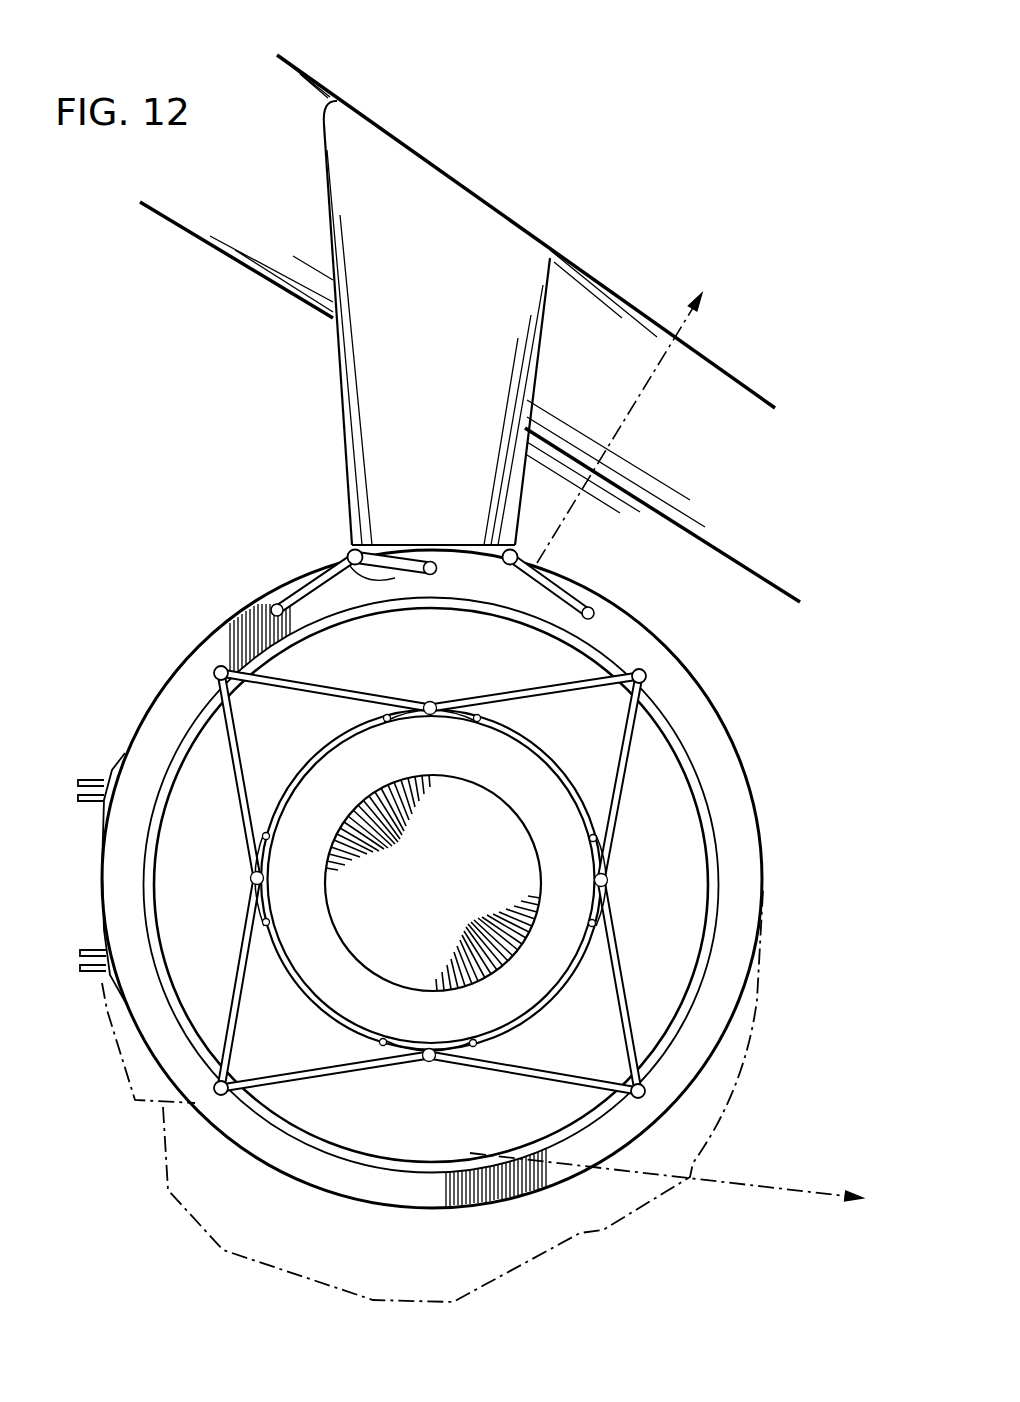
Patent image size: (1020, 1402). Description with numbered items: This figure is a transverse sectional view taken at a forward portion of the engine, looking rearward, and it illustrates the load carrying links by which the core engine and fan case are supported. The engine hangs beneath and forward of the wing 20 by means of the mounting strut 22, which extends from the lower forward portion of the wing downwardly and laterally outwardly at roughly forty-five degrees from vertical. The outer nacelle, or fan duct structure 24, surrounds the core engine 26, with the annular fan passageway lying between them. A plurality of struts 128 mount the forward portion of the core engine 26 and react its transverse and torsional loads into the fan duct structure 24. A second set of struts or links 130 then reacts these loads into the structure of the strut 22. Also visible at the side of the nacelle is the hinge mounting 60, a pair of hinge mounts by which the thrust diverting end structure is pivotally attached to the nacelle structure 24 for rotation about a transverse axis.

The wing 20 is at (260, 275).
The mounting strut 22 is at (340, 375).
The fan duct structure 24 is at (722, 758).
The core engine 26 is at (526, 782).
The struts 128 is at (473, 697).
The links 130 is at (340, 570).
The hinge mounts 60 is at (82, 805).